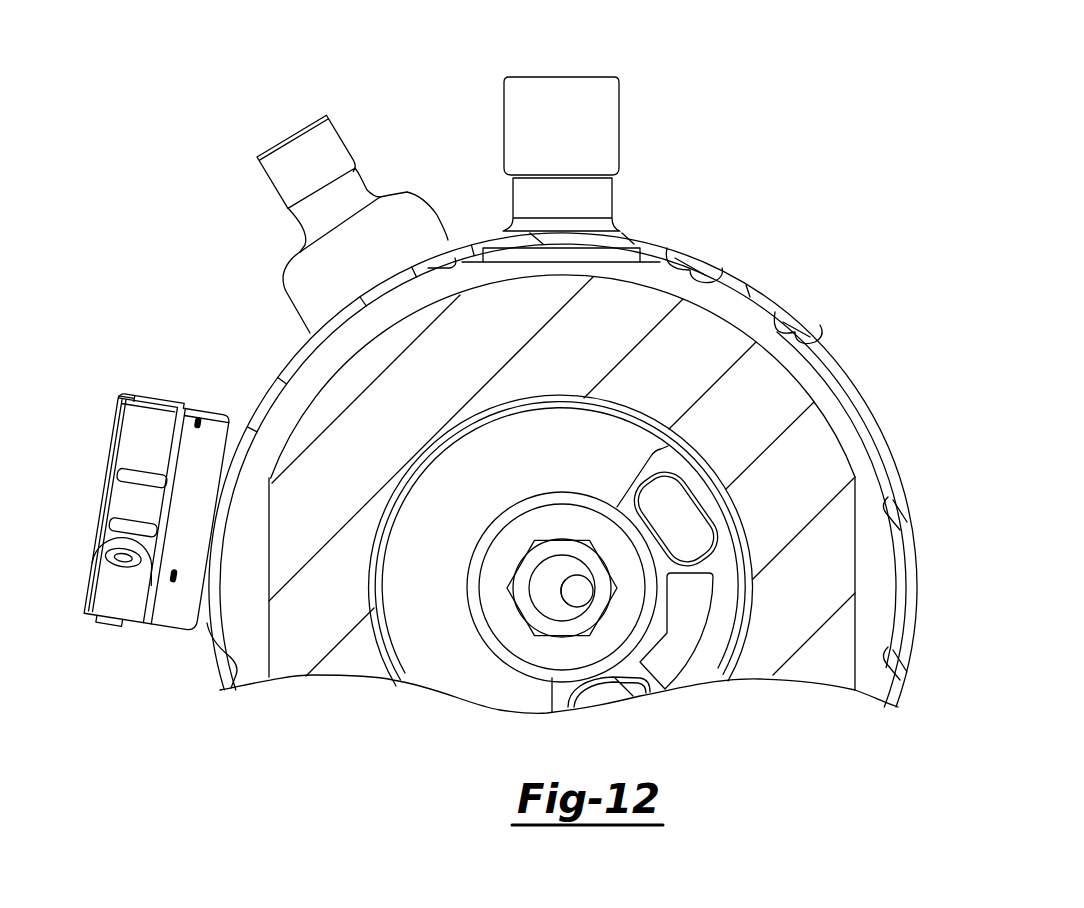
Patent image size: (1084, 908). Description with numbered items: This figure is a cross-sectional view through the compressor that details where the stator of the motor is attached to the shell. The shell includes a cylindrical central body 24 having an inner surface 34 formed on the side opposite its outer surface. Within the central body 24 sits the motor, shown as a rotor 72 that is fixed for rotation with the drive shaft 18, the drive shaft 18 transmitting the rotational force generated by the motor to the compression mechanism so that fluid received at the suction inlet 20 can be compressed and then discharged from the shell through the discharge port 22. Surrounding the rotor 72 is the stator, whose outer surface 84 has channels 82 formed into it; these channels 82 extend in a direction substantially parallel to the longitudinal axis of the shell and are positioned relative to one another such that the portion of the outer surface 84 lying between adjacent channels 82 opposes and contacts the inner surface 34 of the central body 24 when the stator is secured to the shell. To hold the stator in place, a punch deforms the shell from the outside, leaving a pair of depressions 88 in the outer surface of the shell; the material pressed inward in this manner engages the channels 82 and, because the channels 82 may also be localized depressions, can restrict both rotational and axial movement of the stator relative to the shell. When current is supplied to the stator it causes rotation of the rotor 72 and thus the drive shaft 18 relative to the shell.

The drive shaft 18 is at (560, 545).
The suction inlet 20 is at (566, 85).
The discharge port 22 is at (272, 170).
The central body 24 is at (292, 355).
The inner surface 34 is at (907, 577).
The rotor 72 is at (423, 567).
The channels 82 is at (690, 262).
The outer surface 84 is at (748, 290).
The depressions 88 is at (720, 282).